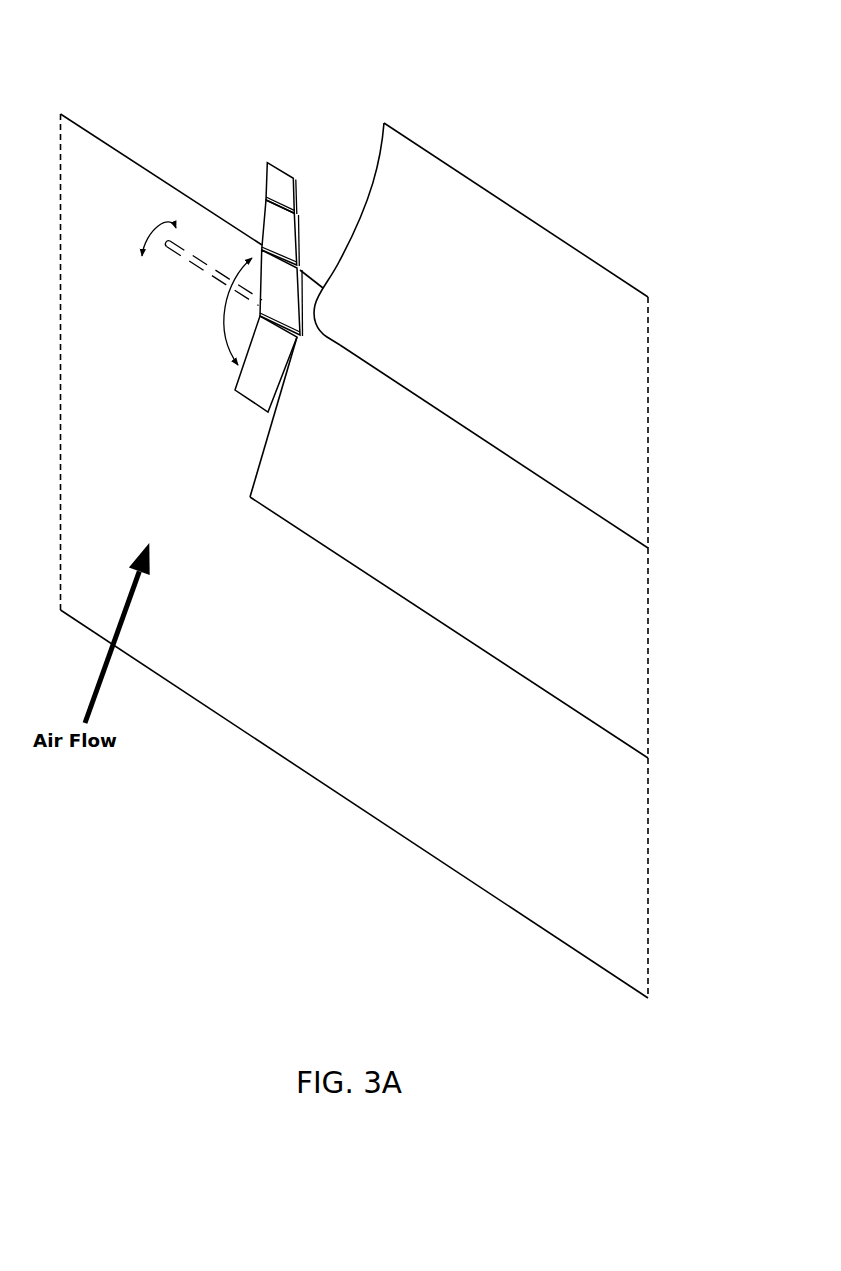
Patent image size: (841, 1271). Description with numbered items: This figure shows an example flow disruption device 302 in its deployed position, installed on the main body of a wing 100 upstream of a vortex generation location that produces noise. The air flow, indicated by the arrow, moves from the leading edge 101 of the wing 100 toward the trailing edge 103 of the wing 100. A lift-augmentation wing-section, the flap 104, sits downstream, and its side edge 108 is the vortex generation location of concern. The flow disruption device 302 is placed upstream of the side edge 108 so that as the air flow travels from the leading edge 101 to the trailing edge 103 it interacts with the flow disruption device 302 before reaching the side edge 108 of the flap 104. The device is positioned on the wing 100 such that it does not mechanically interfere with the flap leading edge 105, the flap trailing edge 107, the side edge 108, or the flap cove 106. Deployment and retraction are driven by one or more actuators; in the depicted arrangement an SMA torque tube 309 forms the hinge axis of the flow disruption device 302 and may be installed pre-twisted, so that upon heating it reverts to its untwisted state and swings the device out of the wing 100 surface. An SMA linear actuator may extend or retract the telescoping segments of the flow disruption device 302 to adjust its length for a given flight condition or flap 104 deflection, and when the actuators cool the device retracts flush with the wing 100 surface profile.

The wing 100 is at (612, 810).
The leading edge 101 is at (380, 822).
The trailing edge 103 is at (130, 156).
The flap 104 is at (623, 368).
The flap leading edge 105 is at (433, 405).
The flap cove 106 is at (613, 633).
The flap trailing edge 107 is at (497, 198).
The side edge 108 is at (367, 216).
The flow disruption device 302 is at (263, 230).
The SMA torque tube 309 is at (203, 270).